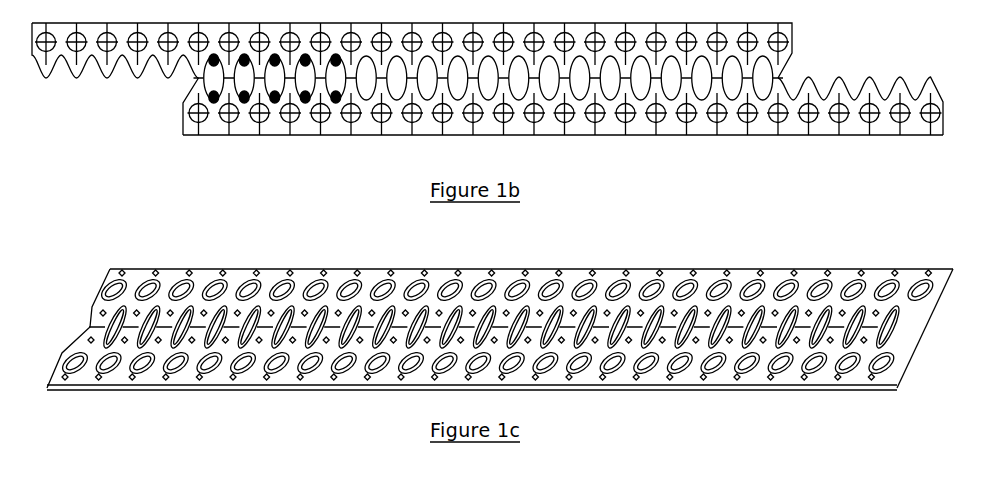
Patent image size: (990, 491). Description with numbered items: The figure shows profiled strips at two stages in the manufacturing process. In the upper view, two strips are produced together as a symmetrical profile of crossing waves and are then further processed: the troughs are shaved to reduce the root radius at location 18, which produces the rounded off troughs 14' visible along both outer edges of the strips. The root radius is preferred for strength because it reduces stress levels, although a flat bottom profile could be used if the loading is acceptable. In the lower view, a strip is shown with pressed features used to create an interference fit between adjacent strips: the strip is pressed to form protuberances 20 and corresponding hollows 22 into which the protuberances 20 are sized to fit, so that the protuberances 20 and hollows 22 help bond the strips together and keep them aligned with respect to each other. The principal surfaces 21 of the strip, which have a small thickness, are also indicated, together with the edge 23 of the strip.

In FIG. 1B, the rounded off troughs 14' is at (487, 75).
In FIG. 1B, the root radius location 18 is at (212, 100).
In FIG. 1C, the protuberances 20 is at (190, 275).
In FIG. 1C, the principal surfaces 21 is at (808, 270).
In FIG. 1C, the hollows 22 is at (67, 380).
In FIG. 1C, the lower edge of strip 23 is at (817, 388).